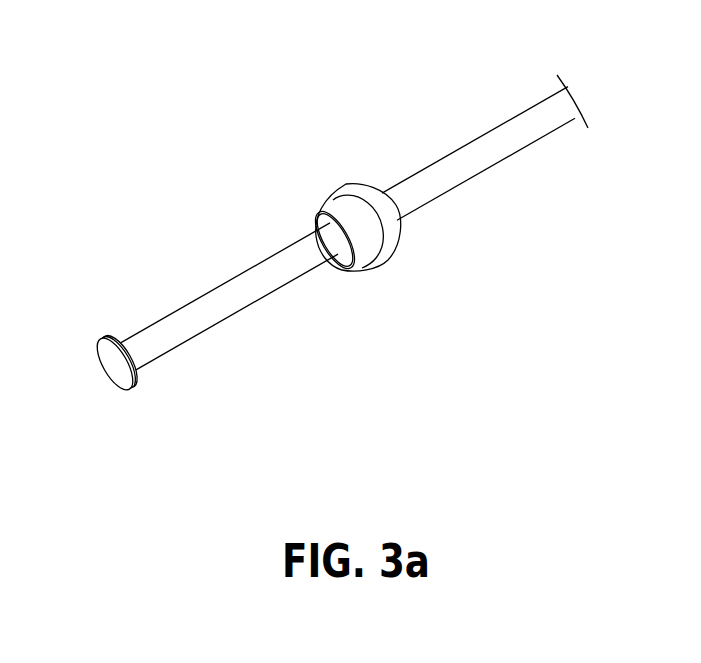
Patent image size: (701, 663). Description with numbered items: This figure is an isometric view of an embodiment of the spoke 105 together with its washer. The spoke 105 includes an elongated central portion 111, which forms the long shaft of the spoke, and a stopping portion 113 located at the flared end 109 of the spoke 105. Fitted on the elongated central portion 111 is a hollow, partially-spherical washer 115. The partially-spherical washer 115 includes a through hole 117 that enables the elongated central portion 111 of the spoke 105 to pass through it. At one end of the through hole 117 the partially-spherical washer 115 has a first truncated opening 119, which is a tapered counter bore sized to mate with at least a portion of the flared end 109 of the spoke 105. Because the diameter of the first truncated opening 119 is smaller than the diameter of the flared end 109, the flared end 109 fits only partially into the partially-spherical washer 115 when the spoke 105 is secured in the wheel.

The spoke 105 is at (176, 312).
The flared end 109 is at (80, 395).
The elongated central portion 111 is at (442, 172).
The stopping portion 113 is at (101, 363).
The partially-spherical washer 115 is at (300, 243).
The through hole 117 is at (306, 217).
The first truncated opening 119 is at (336, 266).